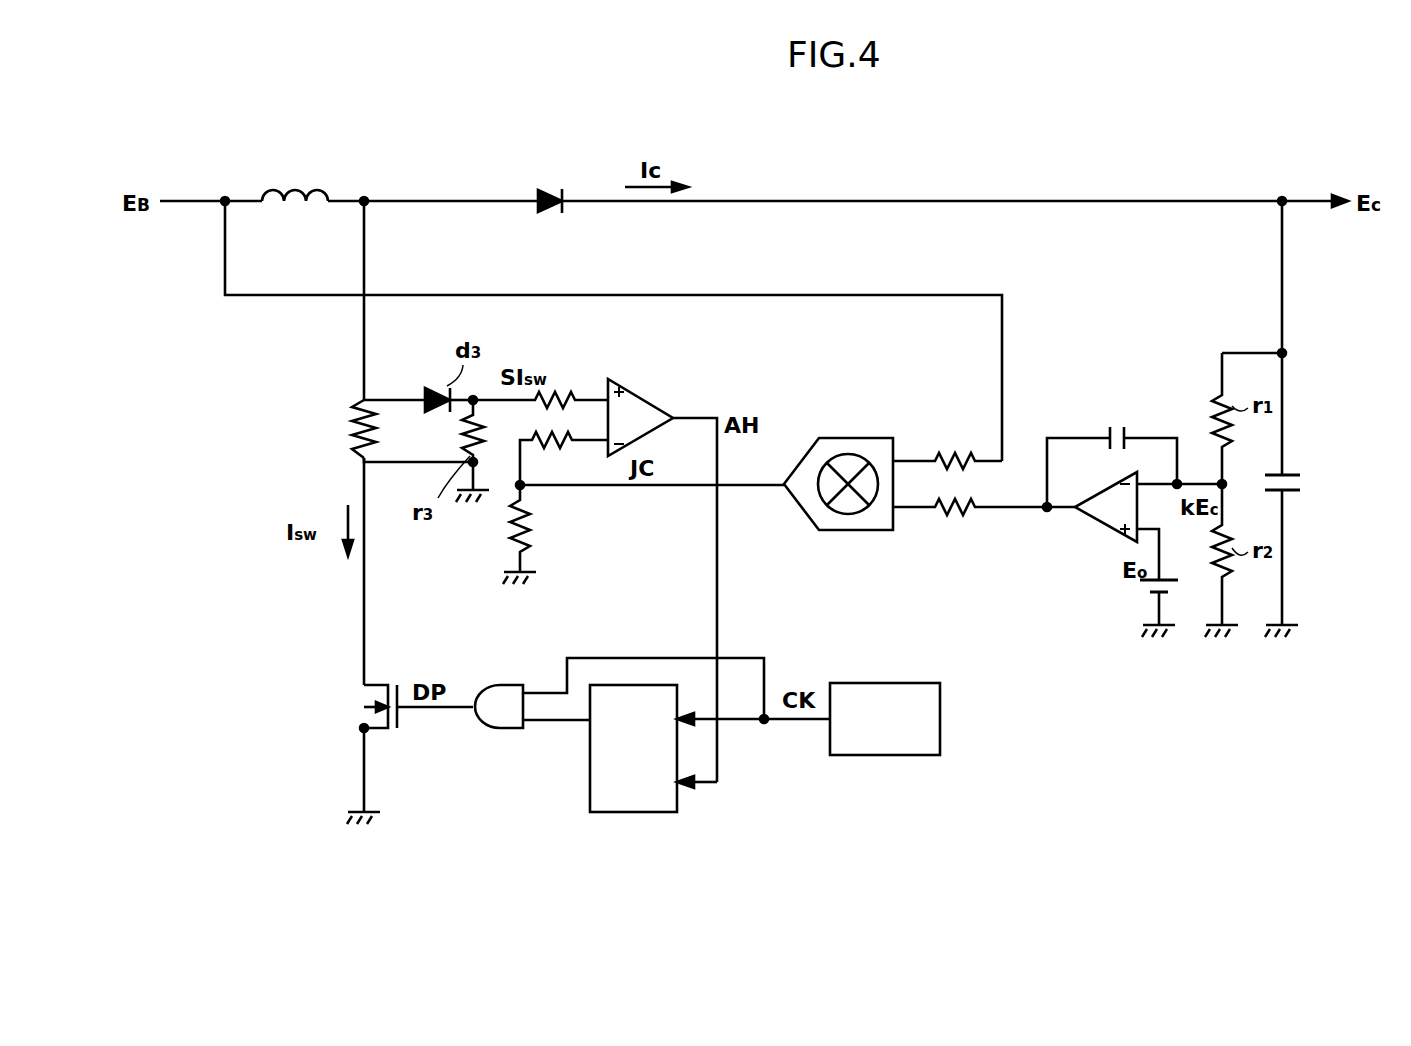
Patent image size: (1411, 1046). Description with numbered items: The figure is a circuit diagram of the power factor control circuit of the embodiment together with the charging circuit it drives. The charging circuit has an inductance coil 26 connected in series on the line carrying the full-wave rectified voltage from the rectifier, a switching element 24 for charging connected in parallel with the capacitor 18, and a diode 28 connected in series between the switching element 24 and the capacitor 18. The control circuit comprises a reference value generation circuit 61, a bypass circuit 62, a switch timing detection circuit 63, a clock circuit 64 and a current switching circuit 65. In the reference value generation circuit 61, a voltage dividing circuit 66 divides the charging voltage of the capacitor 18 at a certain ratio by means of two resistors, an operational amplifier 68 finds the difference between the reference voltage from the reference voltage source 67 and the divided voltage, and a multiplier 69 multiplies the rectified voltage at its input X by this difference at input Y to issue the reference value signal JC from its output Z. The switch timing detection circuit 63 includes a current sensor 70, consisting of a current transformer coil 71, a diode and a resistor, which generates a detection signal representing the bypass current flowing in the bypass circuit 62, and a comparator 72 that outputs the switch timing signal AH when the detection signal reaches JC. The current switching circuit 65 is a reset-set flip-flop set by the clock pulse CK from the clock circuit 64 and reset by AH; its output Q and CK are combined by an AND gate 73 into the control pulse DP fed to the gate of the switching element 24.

The capacitor 18 is at (1305, 484).
The switching element for charging 24 is at (358, 705).
The inductance coil 26 is at (295, 185).
The diode 28 is at (553, 188).
The reference value generation circuit 61 is at (1034, 366).
The bypass circuit 62 is at (362, 358).
The switch timing detection circuit 63 is at (601, 505).
The clock circuit 64 is at (912, 683).
The current switching circuit 65 is at (660, 814).
The voltage dividing circuit 66 is at (1193, 435).
The reference voltage source 67 is at (1138, 597).
The operational amplifier 68 is at (1100, 545).
The multiplier 69 is at (851, 437).
The current sensor 70 is at (401, 385).
The current transformer coil 71 is at (352, 432).
The comparator 72 is at (648, 393).
The AND gate 73 is at (505, 685).